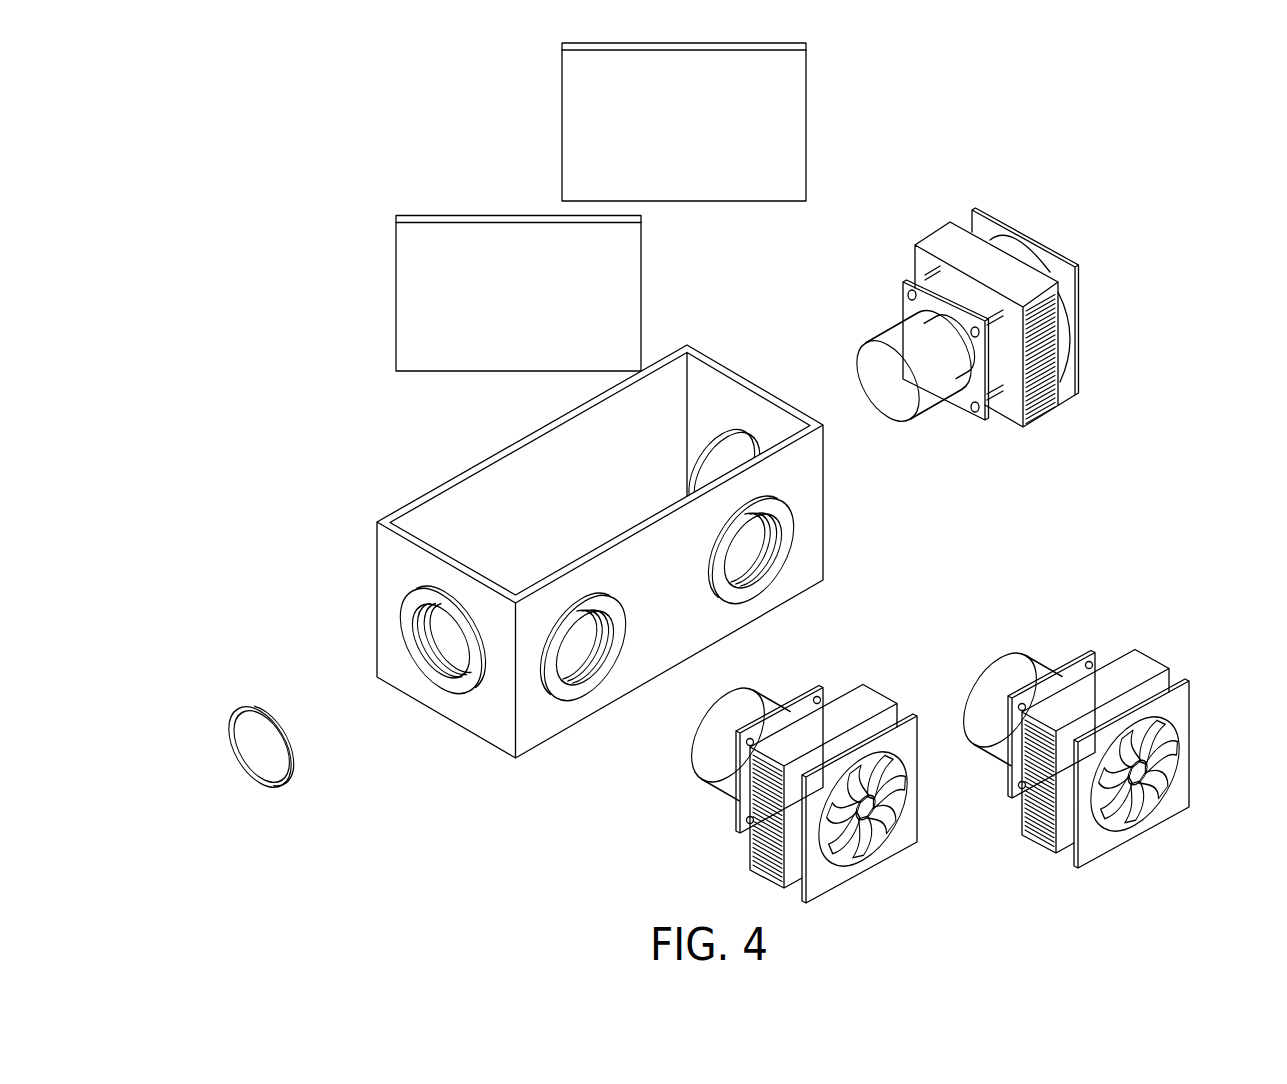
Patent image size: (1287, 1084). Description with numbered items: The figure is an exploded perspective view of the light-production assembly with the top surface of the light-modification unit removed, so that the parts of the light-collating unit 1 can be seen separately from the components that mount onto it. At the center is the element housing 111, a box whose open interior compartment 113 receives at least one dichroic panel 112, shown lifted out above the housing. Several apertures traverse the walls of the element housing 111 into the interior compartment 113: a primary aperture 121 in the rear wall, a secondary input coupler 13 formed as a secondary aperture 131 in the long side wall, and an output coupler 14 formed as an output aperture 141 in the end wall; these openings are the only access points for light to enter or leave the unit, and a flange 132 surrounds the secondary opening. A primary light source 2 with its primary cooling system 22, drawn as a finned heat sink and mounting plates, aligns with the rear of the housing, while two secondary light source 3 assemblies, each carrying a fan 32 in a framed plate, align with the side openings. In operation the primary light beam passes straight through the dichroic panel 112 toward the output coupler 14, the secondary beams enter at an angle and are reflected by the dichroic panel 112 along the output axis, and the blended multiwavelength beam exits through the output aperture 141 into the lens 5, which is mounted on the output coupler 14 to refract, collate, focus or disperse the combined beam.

The light-collating unit 1 is at (512, 850).
The element housing 111 is at (505, 453).
The dichroic panel 112 is at (797, 113).
The interior compartment 113 is at (485, 507).
The primary aperture 121 is at (740, 448).
The secondary input coupler 13 is at (750, 507).
The secondary aperture 131 is at (747, 552).
The annular flange 132 is at (592, 598).
The output coupler 14 is at (472, 659).
The output aperture 141 is at (447, 630).
The primary light source 2 is at (898, 340).
The primary cooling system 22 is at (940, 232).
The secondary light source 3 is at (757, 700).
The fan 32 is at (903, 836).
The lens 5 is at (243, 711).